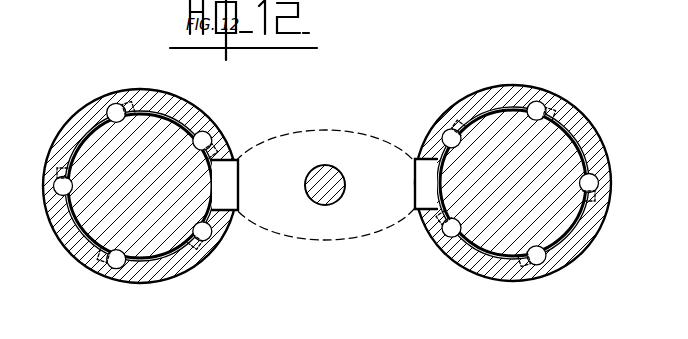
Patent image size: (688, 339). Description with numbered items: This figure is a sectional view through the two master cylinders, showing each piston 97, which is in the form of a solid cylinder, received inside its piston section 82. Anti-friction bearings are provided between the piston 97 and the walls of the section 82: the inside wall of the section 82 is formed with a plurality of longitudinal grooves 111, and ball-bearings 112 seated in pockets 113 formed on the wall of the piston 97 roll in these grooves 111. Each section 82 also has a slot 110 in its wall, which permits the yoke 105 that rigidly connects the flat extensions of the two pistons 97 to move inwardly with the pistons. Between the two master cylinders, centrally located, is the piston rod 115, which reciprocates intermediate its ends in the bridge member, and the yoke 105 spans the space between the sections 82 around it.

The piston section 82 is at (190, 113).
The piston 97 is at (105, 218).
The yoke 105 is at (323, 128).
The slot 110 is at (232, 192).
The longitudinal grooves 111 is at (118, 103).
The ball-bearings 112 is at (106, 108).
The pockets 113 is at (78, 120).
The piston rod 115 is at (333, 181).